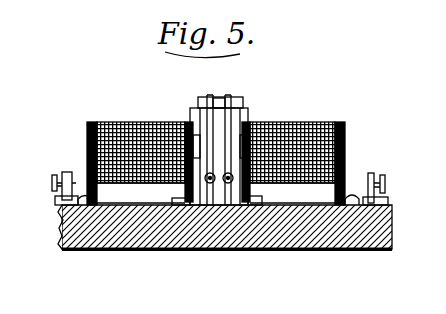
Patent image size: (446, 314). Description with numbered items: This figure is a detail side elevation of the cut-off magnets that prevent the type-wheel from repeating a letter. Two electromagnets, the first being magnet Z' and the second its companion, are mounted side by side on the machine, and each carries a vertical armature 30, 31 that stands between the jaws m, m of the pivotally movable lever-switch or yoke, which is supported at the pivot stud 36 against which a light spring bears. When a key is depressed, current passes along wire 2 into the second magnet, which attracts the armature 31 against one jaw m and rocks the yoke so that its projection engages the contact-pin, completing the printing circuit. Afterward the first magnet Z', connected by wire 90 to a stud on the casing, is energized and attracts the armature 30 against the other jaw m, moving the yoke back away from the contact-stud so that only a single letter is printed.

The wire 2 is at (348, 206).
The wire 90 is at (66, 252).
The electromagnet Z' is at (140, 152).
The jaws m is at (213, 127).
The vertical armature 30 is at (207, 97).
The vertical armature 31 is at (232, 94).
The pivot stud 36 is at (216, 100).